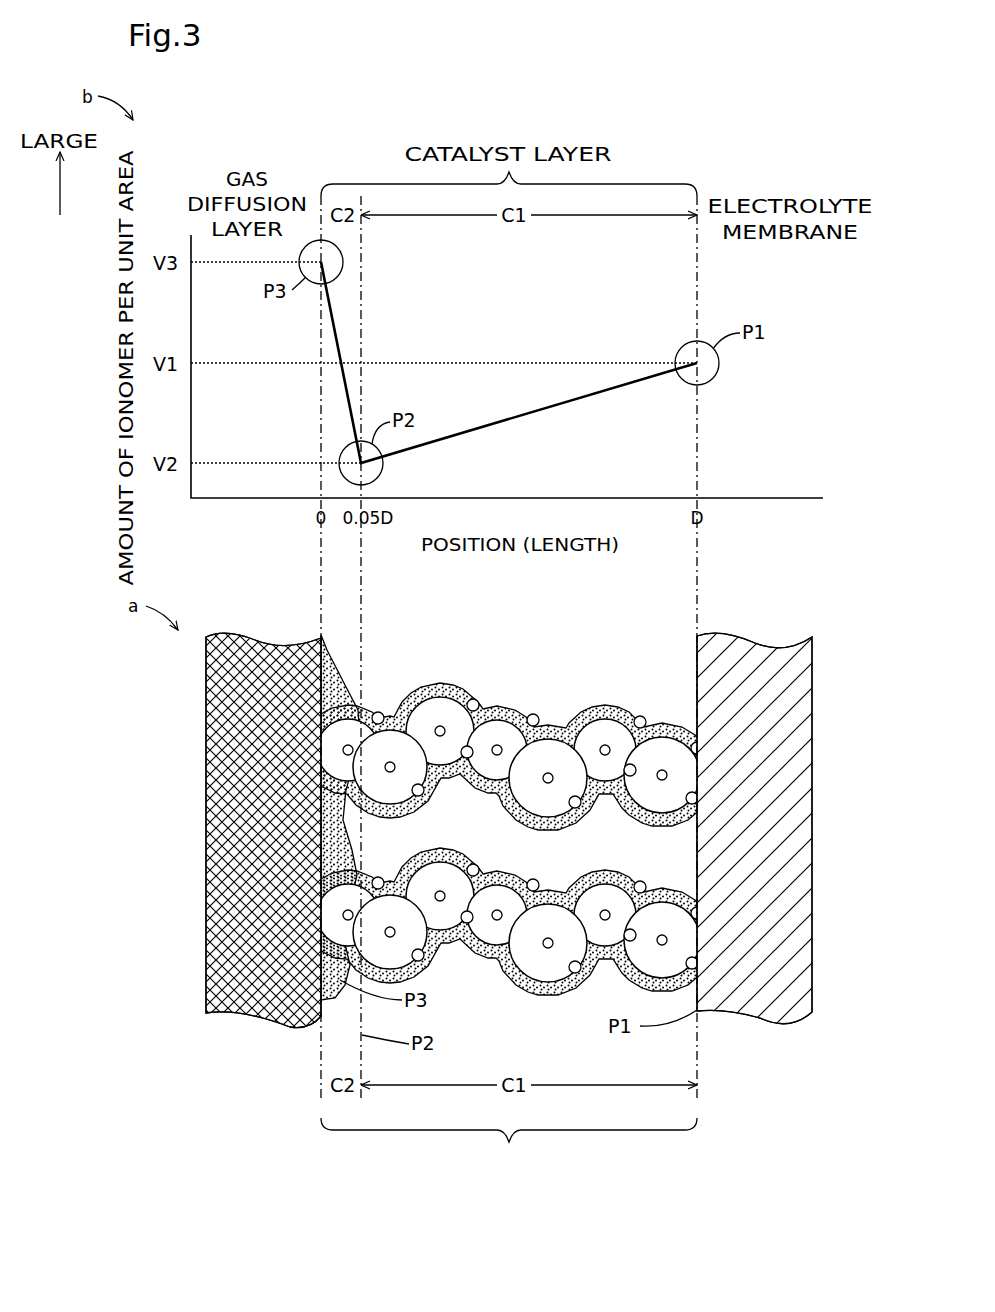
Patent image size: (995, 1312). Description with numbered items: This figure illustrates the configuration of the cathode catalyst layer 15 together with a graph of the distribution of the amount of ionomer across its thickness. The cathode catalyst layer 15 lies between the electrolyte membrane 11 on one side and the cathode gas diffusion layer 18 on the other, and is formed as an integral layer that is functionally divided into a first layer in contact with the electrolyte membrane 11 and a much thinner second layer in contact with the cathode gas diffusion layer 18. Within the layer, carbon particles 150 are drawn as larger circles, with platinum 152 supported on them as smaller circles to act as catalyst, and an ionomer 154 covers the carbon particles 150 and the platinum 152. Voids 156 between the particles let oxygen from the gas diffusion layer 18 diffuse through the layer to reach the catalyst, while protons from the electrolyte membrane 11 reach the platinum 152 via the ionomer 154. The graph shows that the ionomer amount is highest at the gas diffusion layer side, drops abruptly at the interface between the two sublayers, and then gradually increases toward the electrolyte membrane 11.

The electrolyte membrane 11 is at (765, 1004).
The cathode catalyst layer 15 is at (509, 1146).
The cathode gas diffusion layer 18 is at (258, 1022).
The carbon particles 150 is at (445, 700).
The platinum 152 is at (478, 700).
The ionomer 154 is at (342, 678).
The voids 156 is at (546, 853).